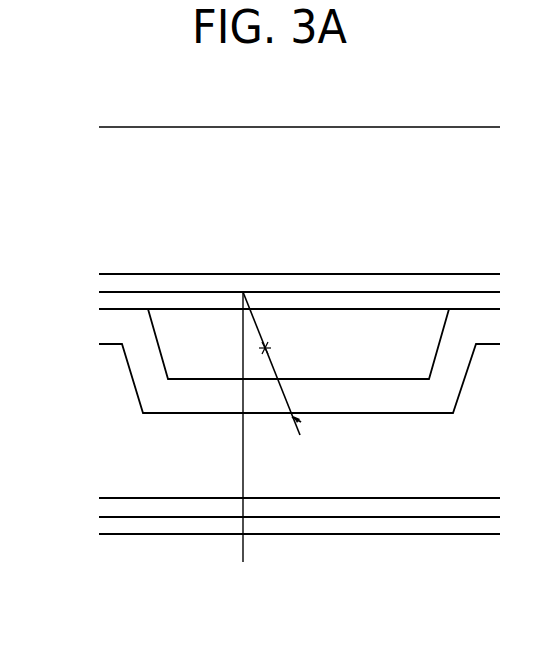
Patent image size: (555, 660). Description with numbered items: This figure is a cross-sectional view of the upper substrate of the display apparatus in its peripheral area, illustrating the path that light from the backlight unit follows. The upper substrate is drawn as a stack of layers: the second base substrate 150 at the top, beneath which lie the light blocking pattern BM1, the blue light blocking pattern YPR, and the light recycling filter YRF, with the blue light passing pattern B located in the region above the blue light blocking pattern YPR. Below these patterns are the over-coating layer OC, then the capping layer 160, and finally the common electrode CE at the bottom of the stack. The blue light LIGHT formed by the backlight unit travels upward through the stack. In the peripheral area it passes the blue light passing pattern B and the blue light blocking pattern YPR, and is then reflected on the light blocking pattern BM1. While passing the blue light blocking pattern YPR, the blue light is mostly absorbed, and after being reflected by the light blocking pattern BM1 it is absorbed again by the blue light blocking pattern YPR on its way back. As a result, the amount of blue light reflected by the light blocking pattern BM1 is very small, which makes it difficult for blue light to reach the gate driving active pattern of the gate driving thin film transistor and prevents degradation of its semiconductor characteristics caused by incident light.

The second base substrate 150 is at (108, 196).
The light blocking pattern BM1 is at (109, 279).
The blue light blocking pattern YPR is at (109, 300).
The light recycling filter YRF is at (109, 330).
The blue light passing pattern B is at (372, 328).
The over-coating layer OC is at (108, 438).
The capping layer 160 is at (108, 508).
The common electrode CE is at (108, 527).
The blue light LIGHT is at (255, 443).